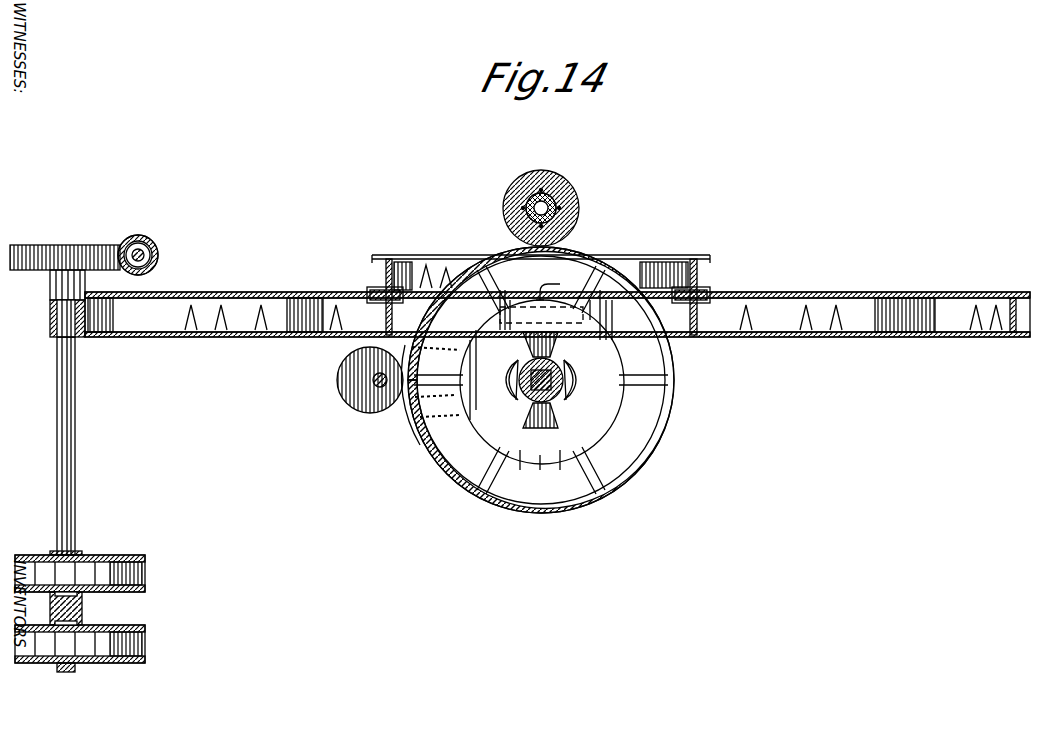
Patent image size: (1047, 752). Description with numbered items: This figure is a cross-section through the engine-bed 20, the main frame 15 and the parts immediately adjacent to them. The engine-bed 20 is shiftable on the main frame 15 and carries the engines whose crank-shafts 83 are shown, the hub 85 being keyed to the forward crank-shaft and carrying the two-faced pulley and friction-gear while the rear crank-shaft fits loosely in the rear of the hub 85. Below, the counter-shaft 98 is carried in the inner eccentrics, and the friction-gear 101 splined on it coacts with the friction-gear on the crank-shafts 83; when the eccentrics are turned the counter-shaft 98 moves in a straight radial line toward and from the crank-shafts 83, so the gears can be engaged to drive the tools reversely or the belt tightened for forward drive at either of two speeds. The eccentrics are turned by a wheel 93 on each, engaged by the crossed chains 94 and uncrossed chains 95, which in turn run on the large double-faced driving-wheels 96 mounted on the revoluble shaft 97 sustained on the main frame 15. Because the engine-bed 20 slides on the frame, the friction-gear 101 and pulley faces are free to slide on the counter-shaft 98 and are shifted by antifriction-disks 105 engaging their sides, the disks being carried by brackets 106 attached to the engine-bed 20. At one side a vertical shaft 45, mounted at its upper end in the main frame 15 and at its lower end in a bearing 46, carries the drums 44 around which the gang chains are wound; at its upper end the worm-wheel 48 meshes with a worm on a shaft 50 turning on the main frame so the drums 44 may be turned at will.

The main frame 15 is at (347, 294).
The engine-bed 20 is at (389, 255).
The drums 44 is at (145, 575).
The vertical shafts 45 is at (157, 253).
The bearings 46 is at (83, 608).
The worm-wheels 48 is at (43, 245).
The shafts 50 is at (144, 258).
The crank-shafts 83 is at (508, 211).
The hub 85 is at (570, 204).
The wheel 93 is at (580, 402).
The crossed chains 94 is at (440, 400).
The uncrossed chains 95 is at (418, 438).
The double-faced driving-wheels 96 is at (373, 413).
The revoluble shaft 97 is at (377, 388).
The counter-shaft 98 is at (587, 373).
The friction-gear 101 is at (583, 250).
The antifriction-disks 105 is at (557, 282).
The brackets 106 is at (650, 287).